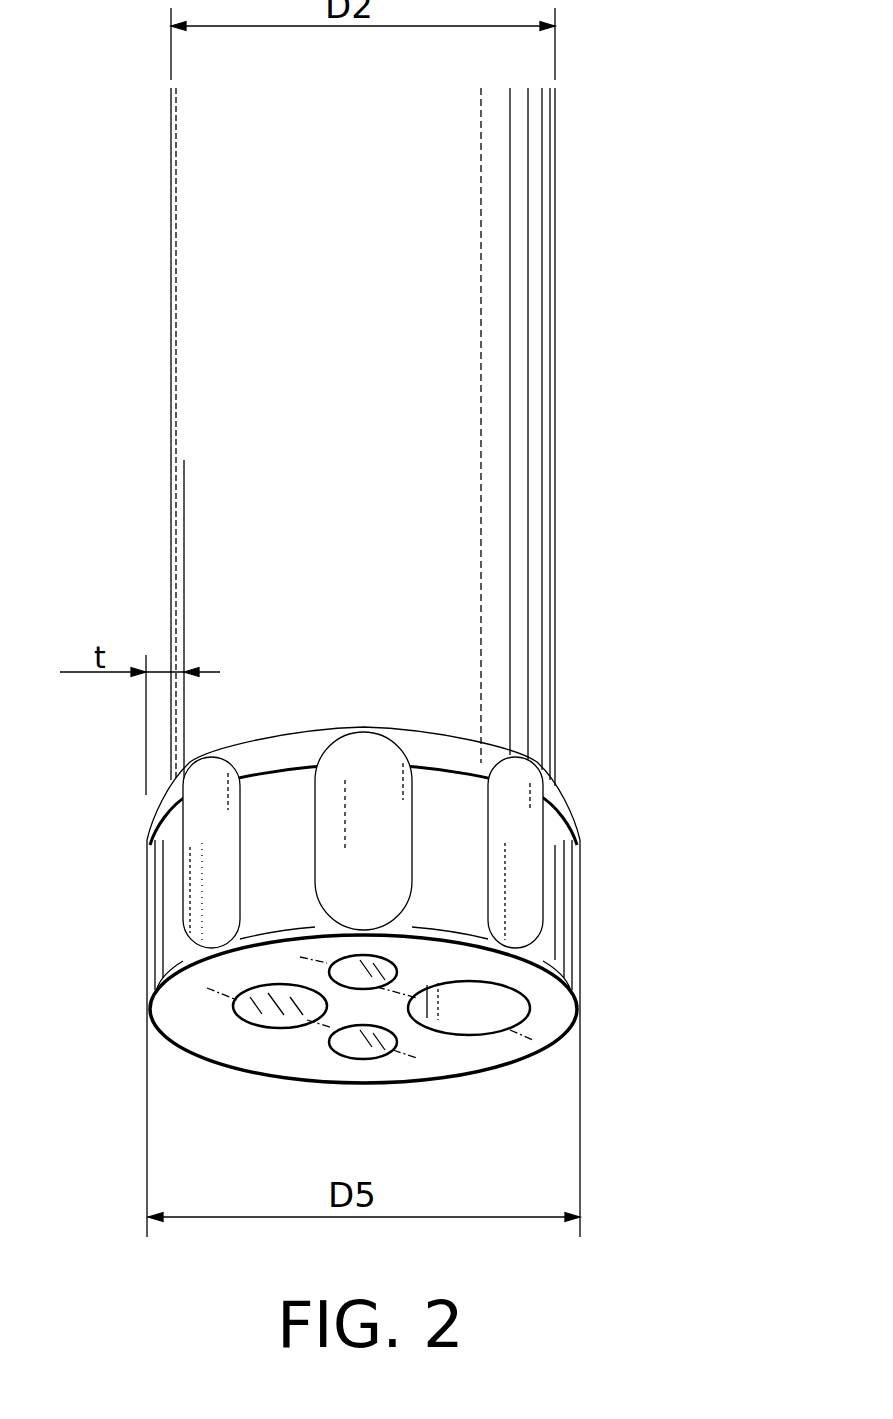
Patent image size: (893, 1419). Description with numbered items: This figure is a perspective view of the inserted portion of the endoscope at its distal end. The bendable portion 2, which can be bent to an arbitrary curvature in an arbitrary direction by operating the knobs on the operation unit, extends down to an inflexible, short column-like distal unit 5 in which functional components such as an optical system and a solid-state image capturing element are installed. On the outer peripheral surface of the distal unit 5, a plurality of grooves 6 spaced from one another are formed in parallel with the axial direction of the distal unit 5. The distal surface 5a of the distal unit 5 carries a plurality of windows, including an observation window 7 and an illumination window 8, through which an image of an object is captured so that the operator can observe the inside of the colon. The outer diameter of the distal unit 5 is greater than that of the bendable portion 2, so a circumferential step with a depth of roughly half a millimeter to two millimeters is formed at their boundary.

The bendable portion 2 is at (190, 421).
The distal unit 5 is at (170, 932).
The distal surface 5a is at (433, 1057).
The grooves 6 is at (345, 853).
The observation window 7 is at (277, 1018).
The illumination window 8 is at (347, 1043).